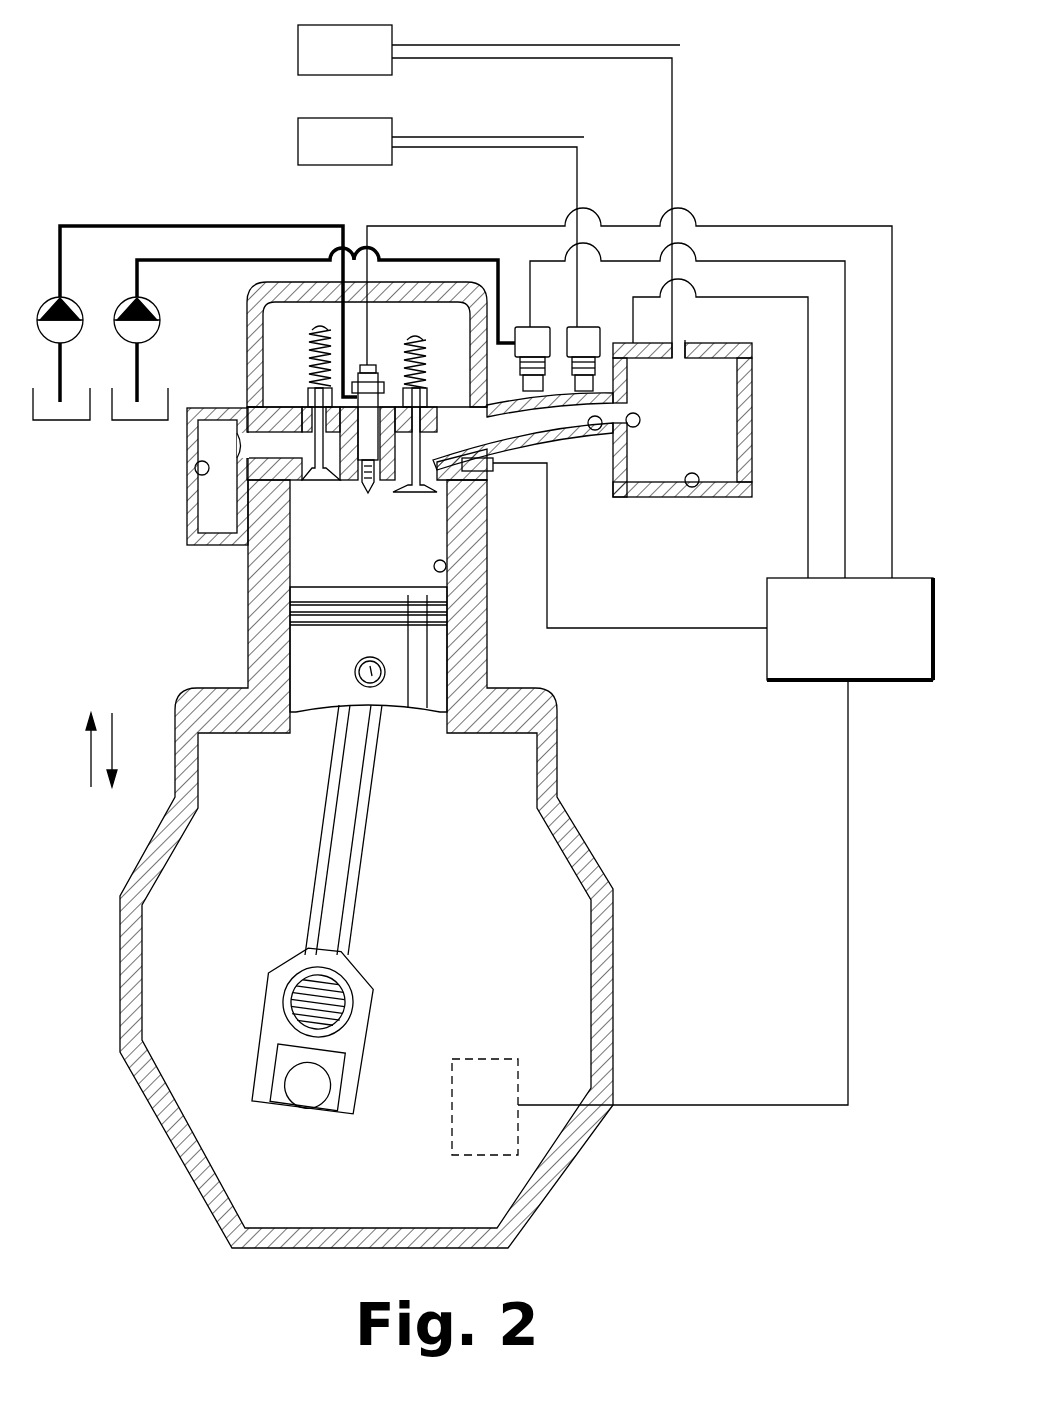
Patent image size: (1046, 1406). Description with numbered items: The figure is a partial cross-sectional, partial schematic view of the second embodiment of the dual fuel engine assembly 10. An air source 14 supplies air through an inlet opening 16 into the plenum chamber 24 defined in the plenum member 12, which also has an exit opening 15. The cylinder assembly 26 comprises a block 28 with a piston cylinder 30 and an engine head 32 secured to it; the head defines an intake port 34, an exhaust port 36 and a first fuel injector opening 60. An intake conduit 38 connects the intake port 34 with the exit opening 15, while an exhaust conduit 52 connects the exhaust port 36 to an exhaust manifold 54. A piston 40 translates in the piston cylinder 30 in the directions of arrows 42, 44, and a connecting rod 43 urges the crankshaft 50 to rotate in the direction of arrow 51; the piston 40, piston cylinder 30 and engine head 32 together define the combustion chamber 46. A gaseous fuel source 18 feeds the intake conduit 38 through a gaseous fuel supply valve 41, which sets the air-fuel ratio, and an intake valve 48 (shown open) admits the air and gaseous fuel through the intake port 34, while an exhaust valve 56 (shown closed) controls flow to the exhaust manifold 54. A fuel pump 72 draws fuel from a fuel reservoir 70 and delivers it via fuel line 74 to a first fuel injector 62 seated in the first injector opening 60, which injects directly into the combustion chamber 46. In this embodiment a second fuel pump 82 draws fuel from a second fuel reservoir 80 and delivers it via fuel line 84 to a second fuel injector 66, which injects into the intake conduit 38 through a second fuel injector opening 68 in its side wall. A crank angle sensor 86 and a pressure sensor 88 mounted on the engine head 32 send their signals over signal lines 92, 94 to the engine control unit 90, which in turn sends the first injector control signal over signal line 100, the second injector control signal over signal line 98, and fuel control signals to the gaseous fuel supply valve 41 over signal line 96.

The engine assembly 10 is at (126, 78).
The plenum member 12 is at (745, 398).
The air source 14 is at (396, 33).
The exit opening 15 is at (640, 421).
The inlet opening 16 is at (683, 340).
The gaseous fuel source 18 is at (396, 127).
The plenum chamber 24 is at (692, 488).
The cylinder assembly 26 is at (208, 630).
The block 28 is at (191, 701).
The piston cylinder 30 is at (447, 566).
The engine head 32 is at (247, 410).
The intake port 34 is at (346, 533).
The exhaust port 36 is at (307, 476).
The intake conduit 38 is at (595, 431).
The piston 40 is at (423, 653).
The gaseous fuel supply valve 41 is at (590, 337).
The arrow 42 is at (88, 752).
The connecting rod 43 is at (349, 834).
The arrow 44 is at (115, 749).
The combustion chamber 46 is at (322, 548).
The intake valve 48 is at (388, 494).
The crankshaft 50 is at (355, 1043).
The arrow 51 is at (332, 1154).
The exhaust conduit 52 is at (230, 432).
The exhaust manifold 54 is at (195, 468).
The exhaust valve 56 is at (305, 407).
The first fuel injector opening 60 is at (362, 483).
The first fuel injector 62 is at (368, 405).
The second fuel injector 66 is at (533, 330).
The second fuel injector opening 68 is at (530, 415).
The fuel reservoir 70 is at (62, 422).
The fuel pump 72 is at (70, 300).
The fuel line 74 is at (196, 225).
The second fuel reservoir 80 is at (120, 422).
The second fuel pump 82 is at (150, 300).
The fuel line 84 is at (205, 262).
The crank angle sensor 86 is at (518, 1058).
The pressure sensor 88 is at (493, 470).
The engine control unit 90 is at (898, 681).
The signal line 92 is at (742, 1107).
The signal line 94 is at (643, 627).
The signal line 96 is at (806, 548).
The signal line 98 is at (846, 486).
The signal line 100 is at (436, 224).